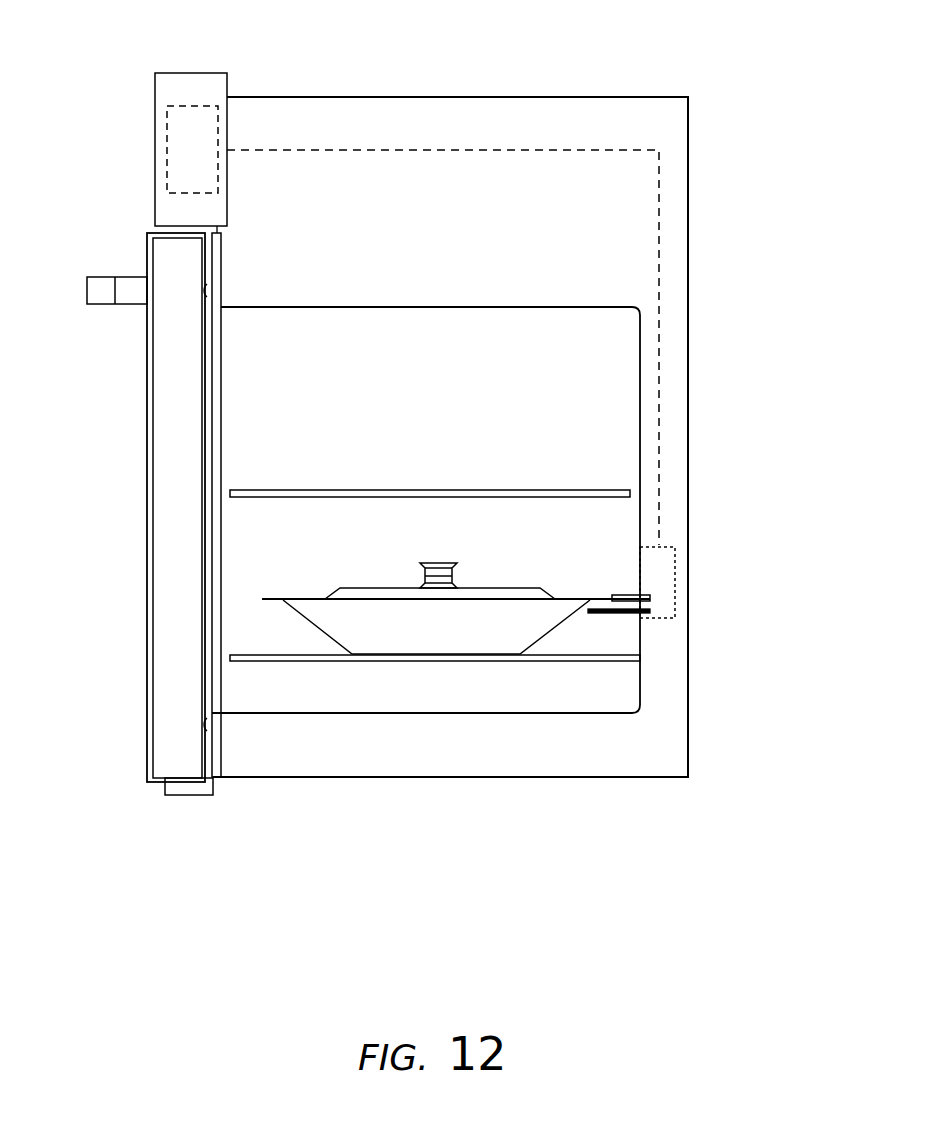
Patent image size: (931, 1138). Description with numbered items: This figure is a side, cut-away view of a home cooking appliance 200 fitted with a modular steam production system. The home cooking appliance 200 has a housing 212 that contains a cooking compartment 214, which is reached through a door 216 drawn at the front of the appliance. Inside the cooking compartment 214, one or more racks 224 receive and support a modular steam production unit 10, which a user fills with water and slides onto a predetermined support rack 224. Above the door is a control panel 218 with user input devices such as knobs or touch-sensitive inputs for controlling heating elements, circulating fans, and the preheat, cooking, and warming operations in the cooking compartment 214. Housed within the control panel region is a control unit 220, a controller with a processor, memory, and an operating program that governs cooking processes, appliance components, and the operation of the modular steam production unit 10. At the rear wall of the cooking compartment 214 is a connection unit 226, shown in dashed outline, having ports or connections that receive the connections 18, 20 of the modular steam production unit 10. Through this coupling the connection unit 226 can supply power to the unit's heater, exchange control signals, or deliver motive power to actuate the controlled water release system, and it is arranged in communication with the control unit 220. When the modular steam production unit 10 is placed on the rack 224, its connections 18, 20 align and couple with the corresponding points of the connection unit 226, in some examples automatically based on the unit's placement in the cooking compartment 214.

The modular steam production unit 10 is at (360, 588).
The connection 18 is at (627, 595).
The connection 20 is at (618, 613).
The home cooking appliance 200 is at (836, 837).
The housing 212 is at (502, 97).
The cooking compartment 214 is at (442, 307).
The door 216 is at (147, 732).
The control panel 218 is at (186, 73).
The control unit 220 is at (165, 134).
The rack 224 is at (530, 490).
The connection unit 226 is at (675, 573).